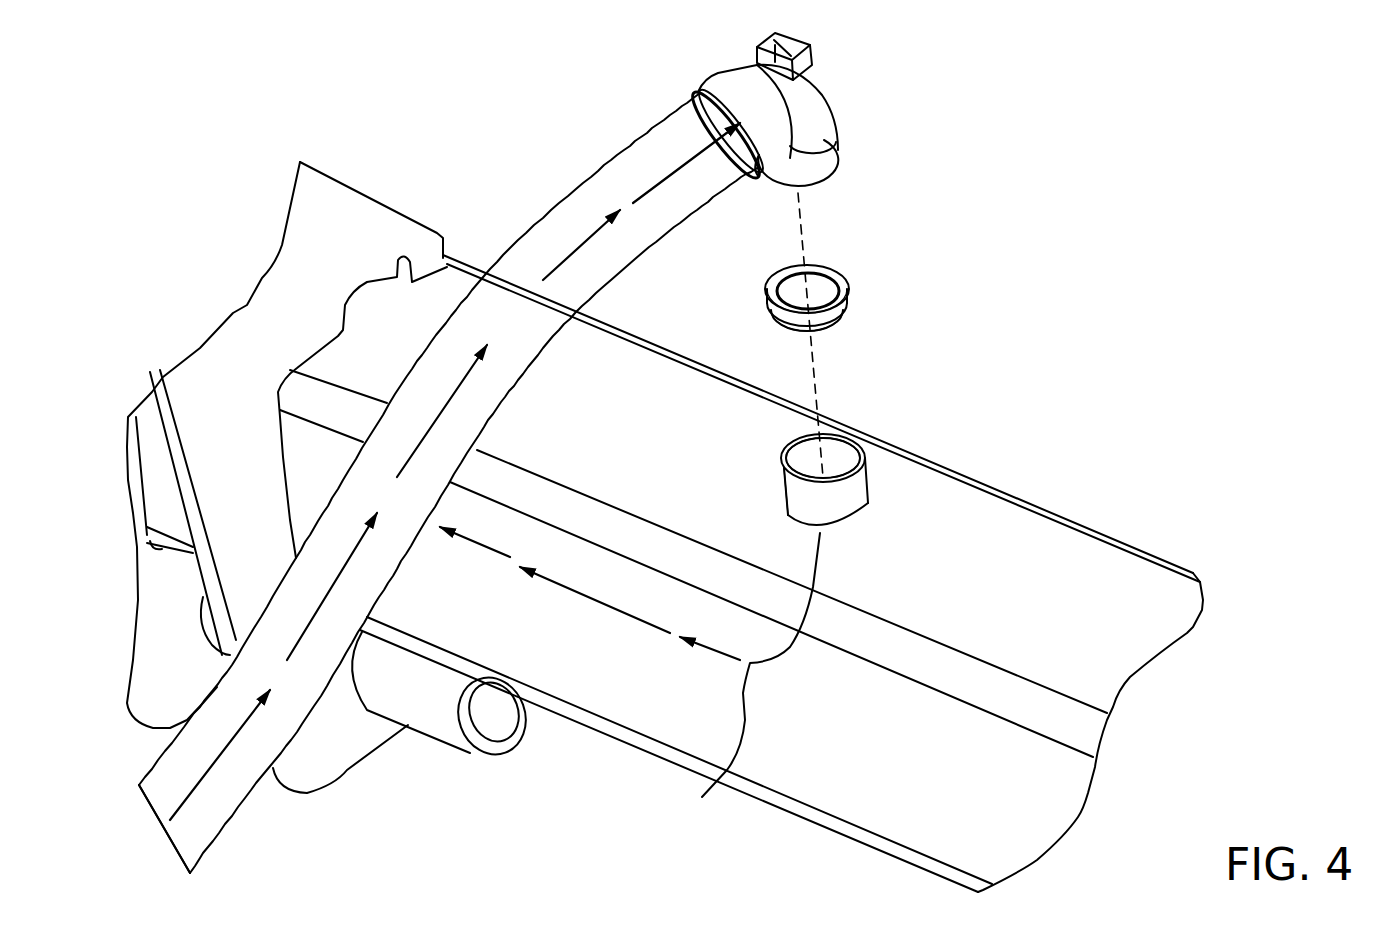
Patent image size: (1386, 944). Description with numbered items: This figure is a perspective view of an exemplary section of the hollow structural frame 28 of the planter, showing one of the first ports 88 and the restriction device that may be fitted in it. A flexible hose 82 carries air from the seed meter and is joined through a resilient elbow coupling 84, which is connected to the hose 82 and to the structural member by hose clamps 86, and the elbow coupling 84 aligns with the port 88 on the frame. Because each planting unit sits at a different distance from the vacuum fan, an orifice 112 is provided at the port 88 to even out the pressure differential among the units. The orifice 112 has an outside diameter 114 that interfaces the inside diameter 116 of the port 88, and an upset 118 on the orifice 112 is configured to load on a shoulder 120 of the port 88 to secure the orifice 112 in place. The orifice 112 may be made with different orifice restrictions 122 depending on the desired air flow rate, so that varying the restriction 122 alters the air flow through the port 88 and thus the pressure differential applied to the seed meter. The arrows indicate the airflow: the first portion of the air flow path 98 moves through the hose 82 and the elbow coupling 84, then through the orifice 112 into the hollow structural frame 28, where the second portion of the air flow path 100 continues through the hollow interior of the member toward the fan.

The hollow structural member 28 is at (1093, 527).
The hose 82 is at (580, 181).
The elbow coupling 84 is at (830, 92).
The hose clamp 86 is at (705, 88).
The first port 88 is at (867, 480).
The first portion of the air flow path 98 is at (217, 773).
The second portion of the air flow path 100 is at (702, 797).
The orifice 112 is at (837, 270).
The outside diameter 114 is at (835, 320).
The inside diameter 116 is at (842, 452).
The upset 118 is at (850, 297).
The shoulder 120 is at (793, 447).
The orifice restriction 122 is at (790, 282).